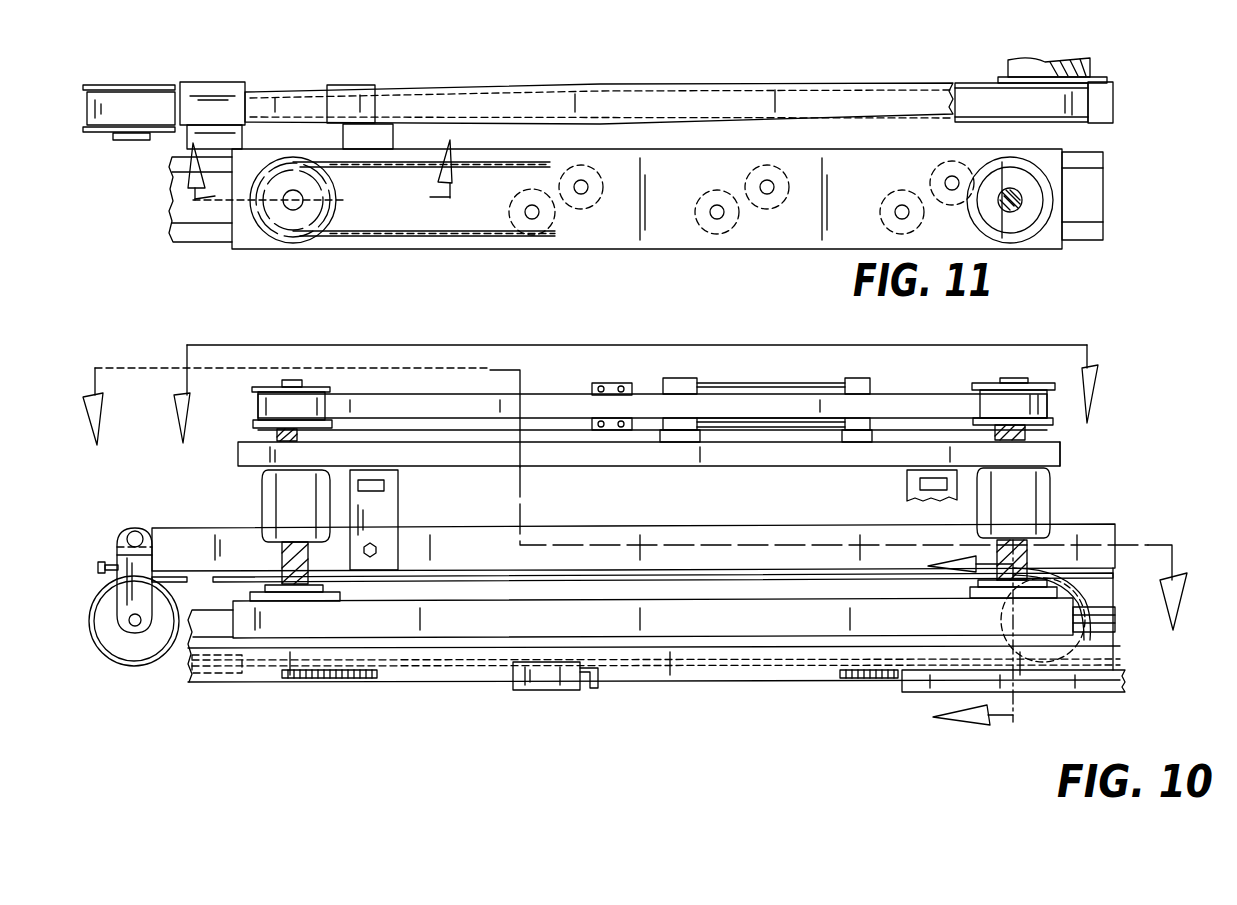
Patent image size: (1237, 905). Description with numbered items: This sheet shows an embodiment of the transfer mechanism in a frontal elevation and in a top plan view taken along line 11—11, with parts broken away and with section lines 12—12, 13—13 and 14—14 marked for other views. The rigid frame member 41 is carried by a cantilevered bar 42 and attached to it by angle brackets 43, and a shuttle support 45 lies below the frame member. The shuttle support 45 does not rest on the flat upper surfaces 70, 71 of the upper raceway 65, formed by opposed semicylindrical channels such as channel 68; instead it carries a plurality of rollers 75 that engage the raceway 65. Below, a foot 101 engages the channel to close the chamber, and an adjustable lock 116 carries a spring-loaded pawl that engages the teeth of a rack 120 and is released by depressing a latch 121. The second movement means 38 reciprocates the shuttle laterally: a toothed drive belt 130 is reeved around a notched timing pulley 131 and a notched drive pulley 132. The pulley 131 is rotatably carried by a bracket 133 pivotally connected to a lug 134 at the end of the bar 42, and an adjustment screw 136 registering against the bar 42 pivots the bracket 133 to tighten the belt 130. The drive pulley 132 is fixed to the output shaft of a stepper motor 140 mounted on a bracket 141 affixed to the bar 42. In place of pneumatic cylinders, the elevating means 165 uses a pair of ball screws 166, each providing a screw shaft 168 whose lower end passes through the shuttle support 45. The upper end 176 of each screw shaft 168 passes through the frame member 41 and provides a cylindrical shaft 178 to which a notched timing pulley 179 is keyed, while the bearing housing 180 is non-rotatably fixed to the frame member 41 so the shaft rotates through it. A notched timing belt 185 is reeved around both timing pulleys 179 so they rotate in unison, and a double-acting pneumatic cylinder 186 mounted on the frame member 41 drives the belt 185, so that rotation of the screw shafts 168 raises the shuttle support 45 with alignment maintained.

In FIG. 10, the section line 11— 11 is at (660, 499).
In FIG. 11, the section line 12— 12 is at (333, 174).
In FIG. 10, the section line 13— 13 is at (952, 636).
In FIG. 10, the section line 14— 14 is at (673, 394).
In FIG. 11, the second movement means 38 is at (950, 70).
In FIG. 11, the rigid frame member 41 is at (657, 235).
In FIG. 10, the rigid frame member 41 is at (587, 458).
In FIG. 11, the cantilevered bar 42 is at (445, 92).
In FIG. 10, the cantilevered bar 42 is at (213, 530).
In FIG. 11, the angle bracket 43 is at (373, 132).
In FIG. 10, the angle bracket 43 is at (385, 508).
In FIG. 10, the shuttle support 45 is at (512, 620).
In FIG. 11, the upper raceway 65 is at (1110, 194).
In FIG. 10, the semicylindrical channel 68 is at (1105, 622).
In FIG. 11, the flat upper surface 70 is at (1090, 232).
In FIG. 11, the flat upper surface 71 is at (1090, 160).
In FIG. 11, the roller 75 is at (548, 225).
In FIG. 10, the foot 101 is at (1035, 688).
In FIG. 10, the adjustable lock 116 is at (543, 683).
In FIG. 10, the rack 120 is at (330, 680).
In FIG. 10, the latch 121 is at (597, 688).
In FIG. 11, the toothed drive belt 130 is at (302, 97).
In FIG. 10, the toothed drive belt 130 is at (170, 663).
In FIG. 11, the notched timing pulley 131 is at (118, 134).
In FIG. 10, the notched timing pulley 131 is at (150, 667).
In FIG. 11, the notched drive pulley 132 is at (1083, 122).
In FIG. 10, the bracket 133 is at (123, 624).
In FIG. 10, the lug 134 is at (150, 530).
In FIG. 10, the adjustment screw 136 is at (100, 562).
In FIG. 11, the stepper motor 140 is at (1090, 62).
In FIG. 11, the bracket 141 is at (1107, 80).
In FIG. 10, the elevating means 165 is at (1085, 450).
In FIG. 10, the ball screw 166 is at (1072, 488).
In FIG. 10, the screw shaft 168 is at (282, 560).
In FIG. 10, the upper end 176 is at (278, 432).
In FIG. 10, the cylindrical shaft 178 is at (290, 380).
In FIG. 11, the notched timing pulley 179 is at (300, 222).
In FIG. 10, the notched timing pulley 179 is at (330, 392).
In FIG. 10, the bearing housing 180 is at (1023, 522).
In FIG. 11, the notched timing belt 185 is at (440, 238).
In FIG. 10, the notched timing belt 185 is at (935, 400).
In FIG. 10, the double-acting pneumatic cylinder 186 is at (705, 380).